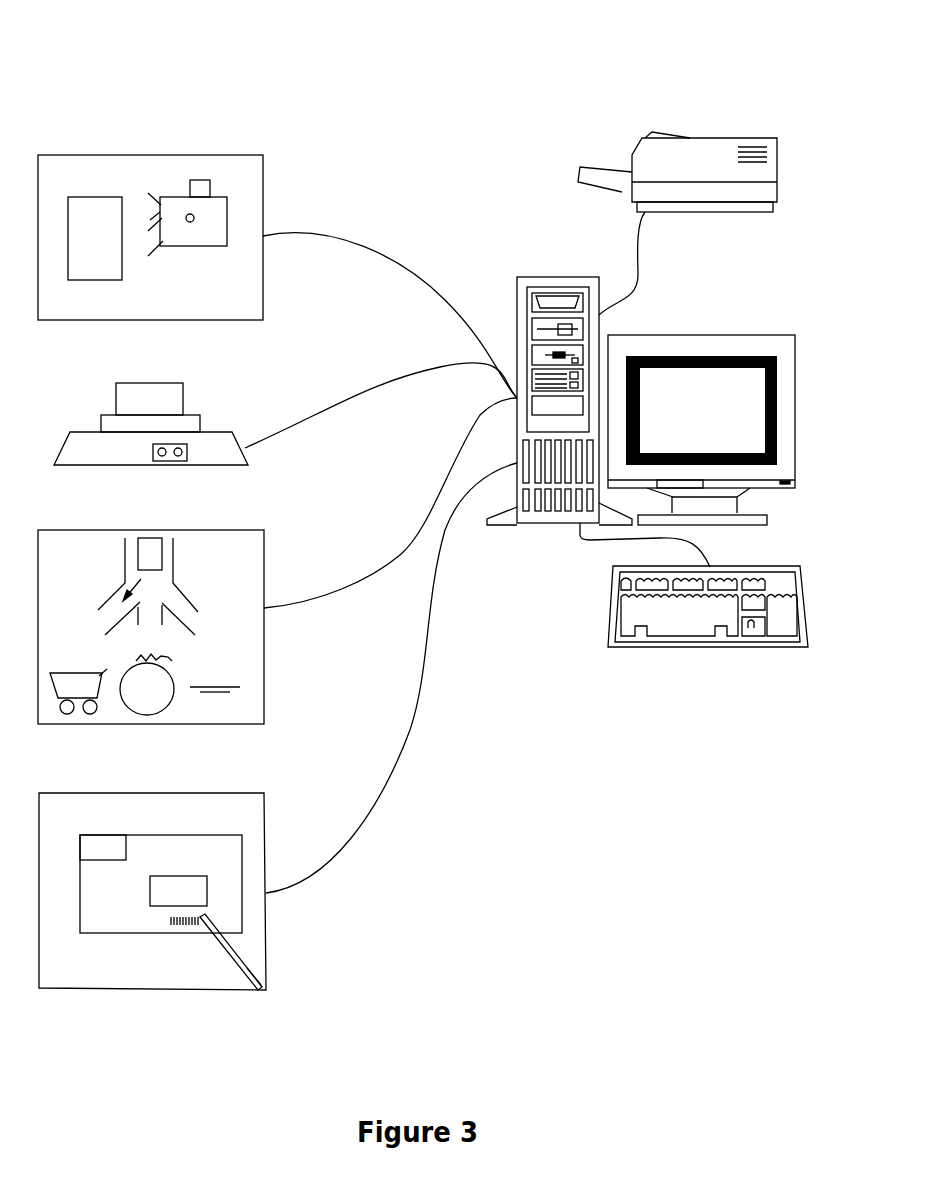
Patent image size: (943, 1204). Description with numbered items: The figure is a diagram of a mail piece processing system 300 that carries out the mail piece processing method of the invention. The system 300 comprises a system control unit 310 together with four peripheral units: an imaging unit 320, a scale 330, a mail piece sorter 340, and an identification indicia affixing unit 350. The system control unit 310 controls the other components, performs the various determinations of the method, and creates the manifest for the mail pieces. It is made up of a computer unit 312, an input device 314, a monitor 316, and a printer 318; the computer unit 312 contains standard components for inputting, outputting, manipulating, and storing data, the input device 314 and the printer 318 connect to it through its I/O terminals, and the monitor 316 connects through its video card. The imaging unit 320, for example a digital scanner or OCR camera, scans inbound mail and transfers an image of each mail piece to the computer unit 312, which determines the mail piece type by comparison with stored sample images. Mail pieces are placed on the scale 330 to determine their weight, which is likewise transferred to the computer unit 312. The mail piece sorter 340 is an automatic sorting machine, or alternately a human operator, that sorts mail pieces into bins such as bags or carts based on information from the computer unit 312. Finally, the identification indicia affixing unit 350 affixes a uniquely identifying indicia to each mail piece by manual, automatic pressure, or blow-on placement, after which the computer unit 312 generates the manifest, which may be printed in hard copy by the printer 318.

The mail piece processing system 300 is at (440, 21).
The system control unit 310 is at (827, 663).
The computer unit 312 is at (547, 527).
The input device 314 is at (608, 608).
The monitor 316 is at (703, 337).
The printer 318 is at (698, 212).
The imaging unit 320 is at (263, 190).
The scale 330 is at (214, 396).
The mail piece sorter 340 is at (264, 543).
The identification indicia affixing unit 350 is at (265, 807).